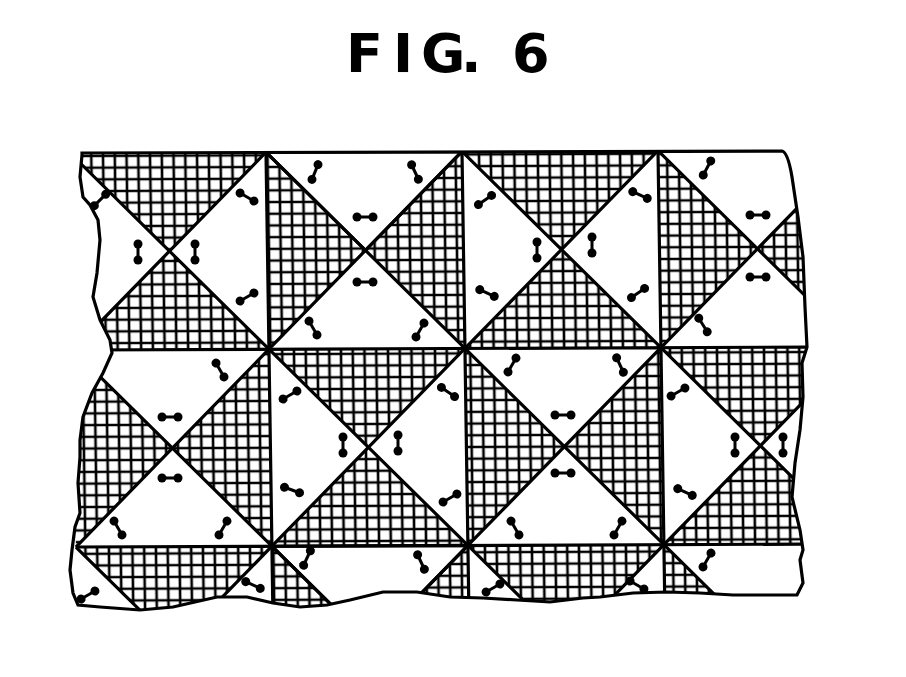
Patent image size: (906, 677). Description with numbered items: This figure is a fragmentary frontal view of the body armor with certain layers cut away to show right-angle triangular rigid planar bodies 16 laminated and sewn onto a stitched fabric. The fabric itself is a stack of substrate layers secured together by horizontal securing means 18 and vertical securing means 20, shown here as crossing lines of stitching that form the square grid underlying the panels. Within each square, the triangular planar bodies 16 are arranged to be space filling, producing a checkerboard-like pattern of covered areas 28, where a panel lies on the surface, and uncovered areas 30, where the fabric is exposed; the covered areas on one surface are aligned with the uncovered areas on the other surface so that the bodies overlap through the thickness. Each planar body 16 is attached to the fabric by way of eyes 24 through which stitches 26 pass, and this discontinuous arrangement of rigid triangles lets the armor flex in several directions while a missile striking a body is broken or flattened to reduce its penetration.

The planar bodies 16 is at (743, 572).
The horizontal securing means 18 is at (153, 157).
The vertical securing means 20 is at (197, 155).
The eyes 24 is at (422, 575).
The stitches 26 is at (308, 560).
The covered areas 28 is at (373, 170).
The uncovered areas 30 is at (582, 162).